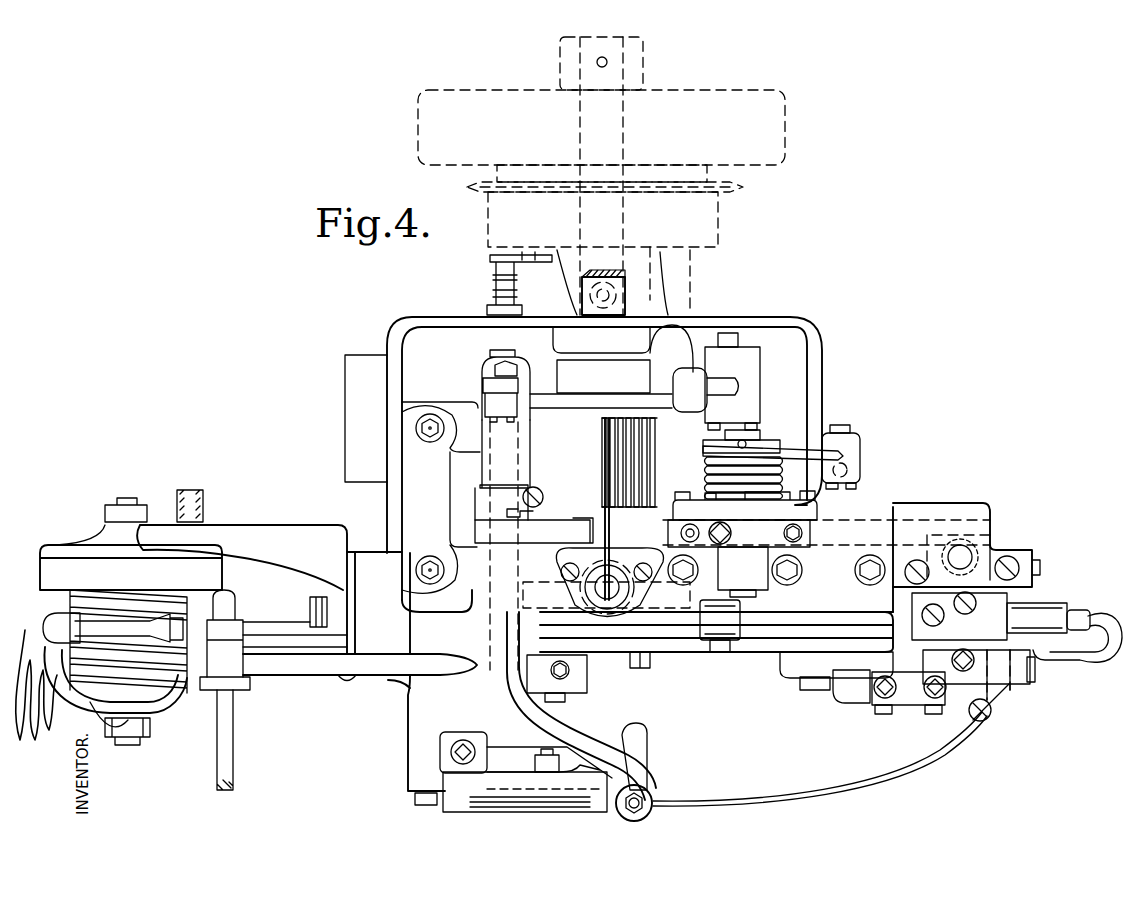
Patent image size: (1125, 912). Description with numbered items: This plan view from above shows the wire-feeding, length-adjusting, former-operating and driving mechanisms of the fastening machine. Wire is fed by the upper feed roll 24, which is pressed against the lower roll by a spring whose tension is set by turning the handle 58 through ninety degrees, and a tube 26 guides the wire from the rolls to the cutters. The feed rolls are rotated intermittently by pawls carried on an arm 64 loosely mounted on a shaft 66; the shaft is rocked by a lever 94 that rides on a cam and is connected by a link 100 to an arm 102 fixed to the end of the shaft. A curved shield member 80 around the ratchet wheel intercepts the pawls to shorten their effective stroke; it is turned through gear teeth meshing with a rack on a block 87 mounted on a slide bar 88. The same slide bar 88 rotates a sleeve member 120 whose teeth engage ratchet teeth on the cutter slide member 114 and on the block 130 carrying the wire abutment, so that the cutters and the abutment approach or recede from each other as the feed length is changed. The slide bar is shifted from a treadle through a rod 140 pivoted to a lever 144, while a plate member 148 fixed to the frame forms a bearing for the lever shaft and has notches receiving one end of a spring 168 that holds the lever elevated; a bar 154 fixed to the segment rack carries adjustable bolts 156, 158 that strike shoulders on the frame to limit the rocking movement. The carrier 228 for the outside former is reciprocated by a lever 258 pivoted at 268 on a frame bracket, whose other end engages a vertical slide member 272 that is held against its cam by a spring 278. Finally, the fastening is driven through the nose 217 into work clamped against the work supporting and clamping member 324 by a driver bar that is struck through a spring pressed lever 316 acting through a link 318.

The upper feed roll 24 is at (575, 806).
The tube 26 is at (950, 757).
The handle 58 is at (640, 740).
The arm 64 is at (583, 672).
The shaft 66 is at (503, 468).
The shield member 80 is at (545, 690).
The block 87 is at (543, 533).
The slide bar 88 is at (865, 518).
The lever 94 is at (730, 383).
The link 100 is at (597, 402).
The arm 102 is at (500, 382).
The slide member 114 is at (935, 540).
The sleeve member 120 is at (975, 550).
The block 130 is at (985, 568).
The link or rod 140 is at (848, 467).
The lever 144 is at (800, 450).
The plate member 148 is at (690, 500).
The bar 154 is at (752, 555).
The adjustable bolt 156 is at (693, 540).
The adjustable bolt 158 is at (800, 540).
The spring 168 is at (757, 465).
The nose 217 is at (1082, 618).
The carrier 228 is at (970, 623).
The lever 258 is at (822, 618).
The pivot 268 is at (745, 610).
The vertical slide member 272 is at (598, 585).
The spring 278 is at (607, 505).
The spring pressed lever 316 is at (85, 700).
The link 318 is at (100, 625).
The work supporting and clamping member 324 is at (1107, 632).